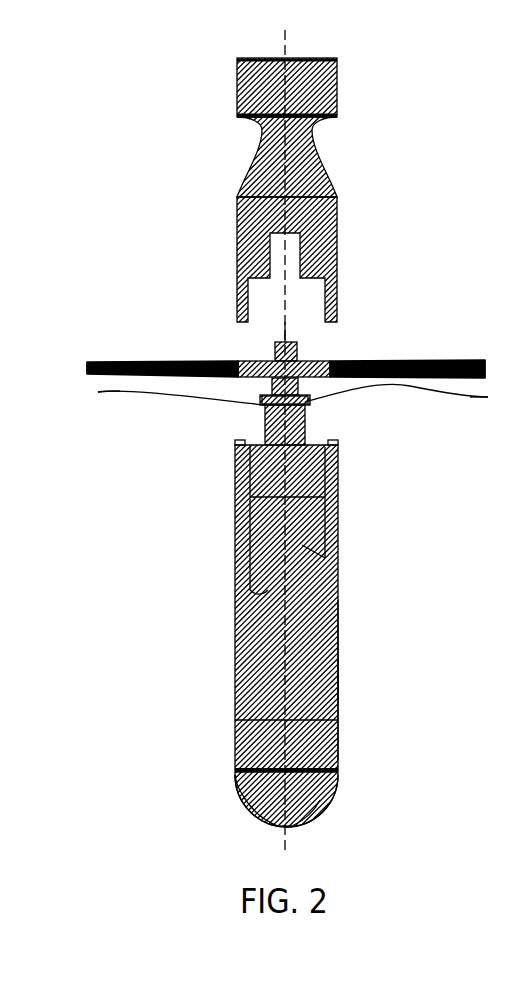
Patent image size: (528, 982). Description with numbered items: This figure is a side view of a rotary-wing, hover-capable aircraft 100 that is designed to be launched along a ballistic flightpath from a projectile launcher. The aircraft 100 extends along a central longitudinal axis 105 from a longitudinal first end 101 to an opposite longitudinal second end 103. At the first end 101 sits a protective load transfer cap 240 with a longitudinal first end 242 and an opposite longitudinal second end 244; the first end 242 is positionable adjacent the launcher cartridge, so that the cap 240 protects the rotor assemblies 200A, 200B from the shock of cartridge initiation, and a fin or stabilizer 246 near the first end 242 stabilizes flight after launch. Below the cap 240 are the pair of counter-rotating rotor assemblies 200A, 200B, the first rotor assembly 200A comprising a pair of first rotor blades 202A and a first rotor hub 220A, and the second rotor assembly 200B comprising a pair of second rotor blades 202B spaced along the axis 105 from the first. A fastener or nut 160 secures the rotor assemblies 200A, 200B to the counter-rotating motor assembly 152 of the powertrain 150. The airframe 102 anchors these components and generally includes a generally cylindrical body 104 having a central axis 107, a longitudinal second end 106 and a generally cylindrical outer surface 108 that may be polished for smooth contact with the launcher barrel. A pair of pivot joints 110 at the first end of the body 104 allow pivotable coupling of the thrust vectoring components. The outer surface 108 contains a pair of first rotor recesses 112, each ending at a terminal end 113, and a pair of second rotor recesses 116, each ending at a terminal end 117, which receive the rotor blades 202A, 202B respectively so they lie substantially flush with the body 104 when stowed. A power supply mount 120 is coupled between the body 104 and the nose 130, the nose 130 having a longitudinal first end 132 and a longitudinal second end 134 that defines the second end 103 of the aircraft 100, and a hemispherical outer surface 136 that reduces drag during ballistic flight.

The aircraft 100 is at (76, 177).
The longitudinal first end 101 is at (151, 276).
The airframe 102 is at (338, 608).
The longitudinal second end 103 is at (331, 830).
The body 104 is at (338, 650).
The central longitudinal axis 105 is at (288, 33).
The longitudinal second end 106 is at (337, 750).
The central axis 107 is at (288, 325).
The outer surface 108 is at (338, 706).
The pivot joints 110 is at (335, 442).
The first rotor recesses 112 is at (270, 510).
The terminal end 113 is at (268, 590).
The second rotor recesses 116 is at (338, 512).
The terminal end 117 is at (338, 562).
The power supply mount 120 is at (337, 772).
The nose 130 is at (333, 790).
The longitudinal first end 132 is at (240, 770).
The longitudinal second end 134 is at (278, 828).
The hemispherical outer surface 136 is at (245, 812).
The powertrain 150 is at (308, 428).
The counter-rotating motor assembly 152 is at (285, 400).
The nut 160 is at (283, 345).
The first rotor assembly 200A is at (104, 346).
The second rotor assembly 200B is at (220, 419).
The first rotor blades 202A is at (165, 360).
The second rotor blades 202B is at (287, 403).
The first rotor hub 220A is at (253, 360).
The load transfer cap 240 is at (330, 172).
The longitudinal first end 242 is at (334, 60).
The longitudinal second end 244 is at (330, 322).
The stabilizer 246 is at (237, 90).